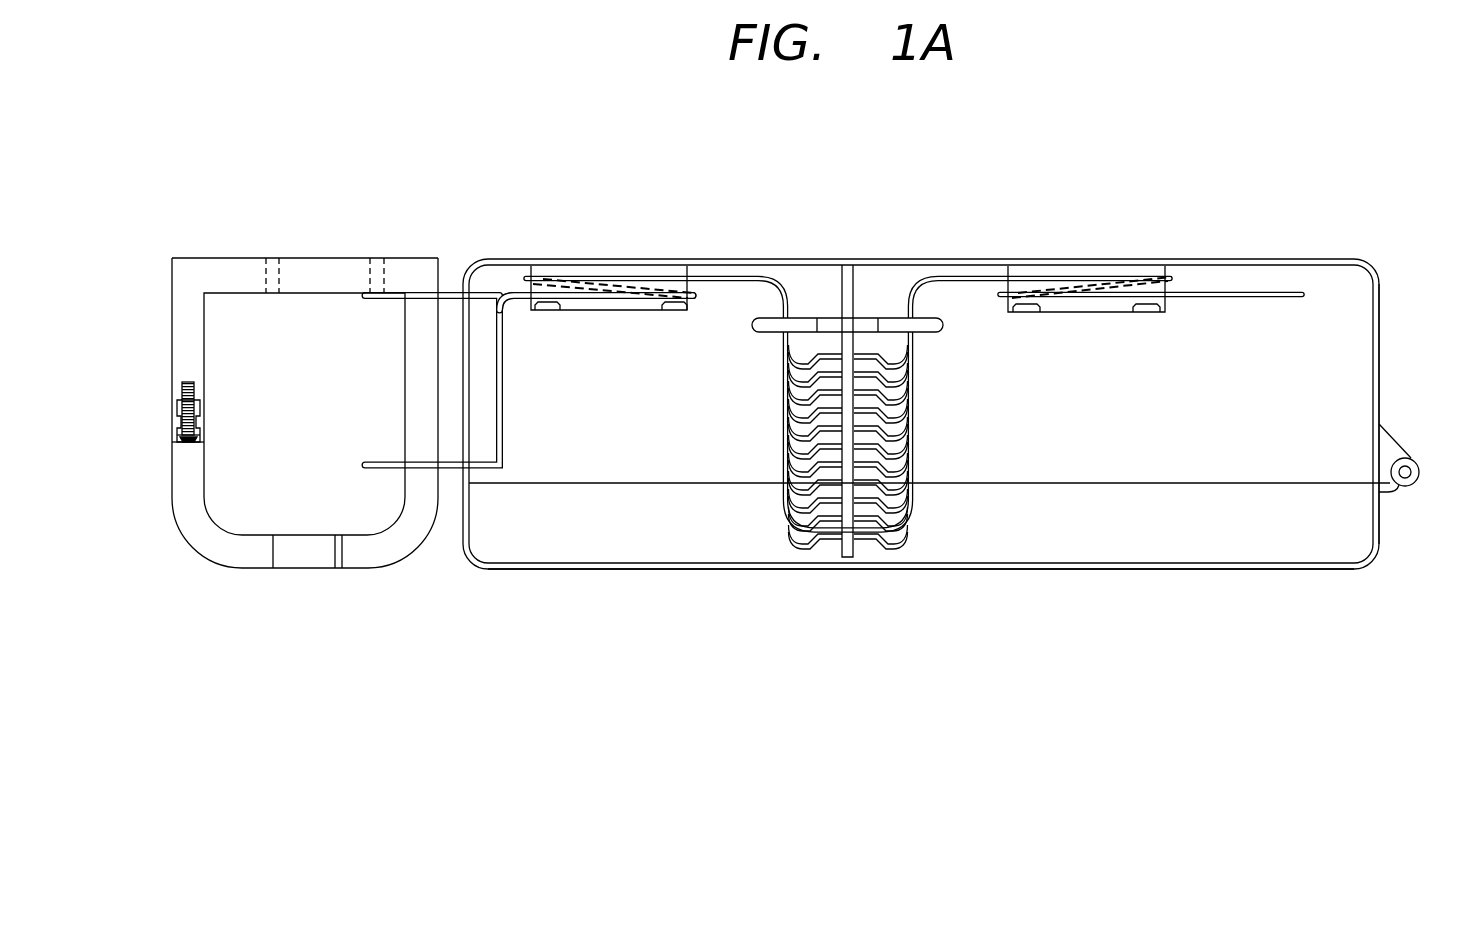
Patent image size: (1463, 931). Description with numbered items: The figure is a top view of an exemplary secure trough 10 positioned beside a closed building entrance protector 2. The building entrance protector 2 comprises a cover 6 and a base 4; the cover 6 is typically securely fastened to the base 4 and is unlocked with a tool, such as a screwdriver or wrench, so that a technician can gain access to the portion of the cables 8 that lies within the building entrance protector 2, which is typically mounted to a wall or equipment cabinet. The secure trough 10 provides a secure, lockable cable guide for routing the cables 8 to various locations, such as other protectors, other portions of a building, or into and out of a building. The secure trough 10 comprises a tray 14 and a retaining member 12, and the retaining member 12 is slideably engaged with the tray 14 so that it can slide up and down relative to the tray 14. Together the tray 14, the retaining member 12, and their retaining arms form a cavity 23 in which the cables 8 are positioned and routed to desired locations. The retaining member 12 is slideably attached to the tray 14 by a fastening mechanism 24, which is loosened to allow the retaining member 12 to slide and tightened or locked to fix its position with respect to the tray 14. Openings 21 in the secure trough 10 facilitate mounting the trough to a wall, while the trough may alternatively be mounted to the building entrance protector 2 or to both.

The building entrance protector 2 is at (1378, 267).
The base 4 is at (1380, 360).
The cover 6 is at (1382, 548).
The cables 8 is at (503, 390).
The secure trough 10 is at (340, 250).
The retaining member 12 is at (190, 547).
The tray 14 is at (420, 547).
The openings 21 is at (272, 294).
The cavity 23 is at (298, 492).
The fastening mechanism 24 is at (197, 413).